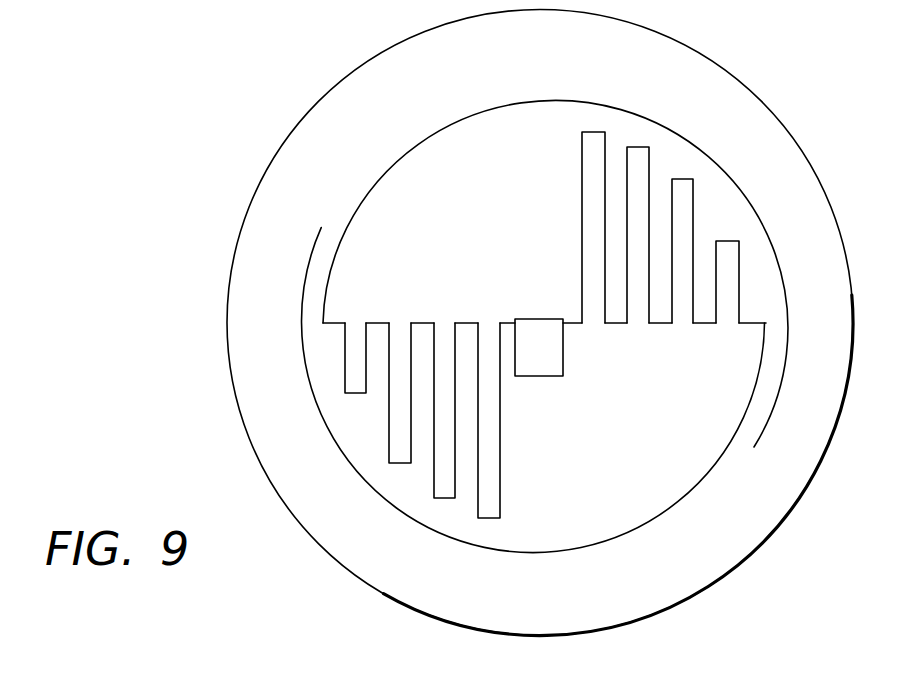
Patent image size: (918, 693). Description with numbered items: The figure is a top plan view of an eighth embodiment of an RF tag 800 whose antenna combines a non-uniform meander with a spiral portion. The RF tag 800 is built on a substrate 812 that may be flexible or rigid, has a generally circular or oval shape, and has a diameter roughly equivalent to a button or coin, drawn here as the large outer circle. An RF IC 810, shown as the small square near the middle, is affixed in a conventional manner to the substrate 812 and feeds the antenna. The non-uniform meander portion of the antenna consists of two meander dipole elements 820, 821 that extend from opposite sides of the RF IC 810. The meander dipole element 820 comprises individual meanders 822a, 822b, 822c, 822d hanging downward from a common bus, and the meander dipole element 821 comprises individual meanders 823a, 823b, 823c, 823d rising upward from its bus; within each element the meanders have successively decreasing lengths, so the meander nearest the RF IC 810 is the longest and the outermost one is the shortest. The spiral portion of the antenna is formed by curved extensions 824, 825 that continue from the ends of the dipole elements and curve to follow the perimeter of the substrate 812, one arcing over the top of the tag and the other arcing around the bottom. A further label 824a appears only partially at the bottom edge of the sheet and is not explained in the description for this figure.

The RF tag 800 is at (264, 66).
The substrate 812 is at (733, 82).
The curved extension 824 is at (398, 158).
The curved extension 825 is at (712, 467).
The RF IC 810 is at (563, 348).
The meander dipole element 820 is at (501, 461).
The meander dipole element 821 is at (582, 148).
The individual meander 822a is at (490, 519).
The individual meander 822b is at (445, 499).
The individual meander 822c is at (400, 464).
The individual meander 822d is at (355, 394).
The individual meander 823a is at (593, 131).
The individual meander 823b is at (638, 146).
The individual meander 823c is at (681, 178).
The individual meander 823d is at (727, 240).
The ring electrode portion 824a is at (323, 687).